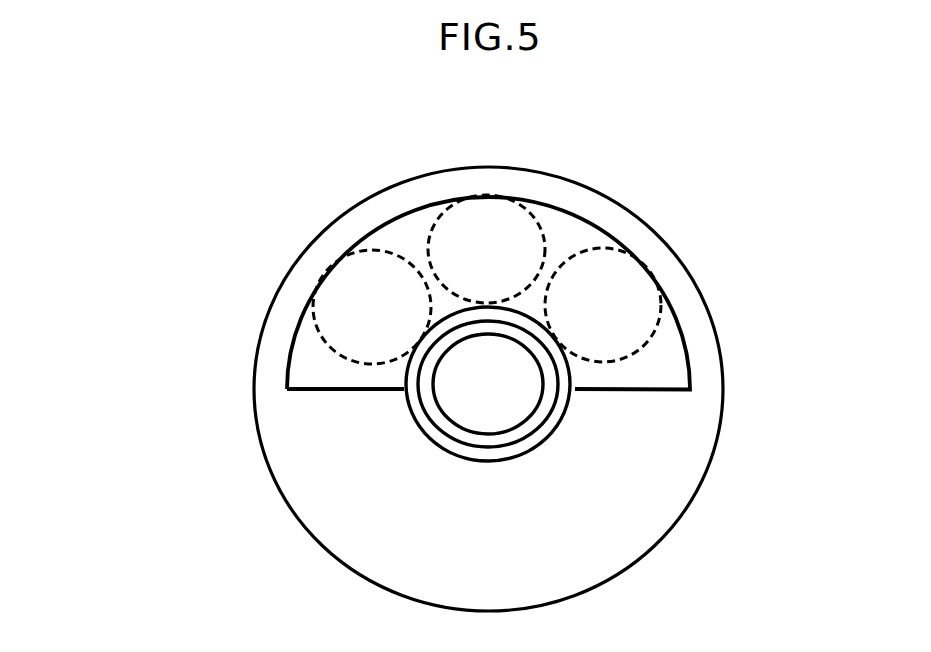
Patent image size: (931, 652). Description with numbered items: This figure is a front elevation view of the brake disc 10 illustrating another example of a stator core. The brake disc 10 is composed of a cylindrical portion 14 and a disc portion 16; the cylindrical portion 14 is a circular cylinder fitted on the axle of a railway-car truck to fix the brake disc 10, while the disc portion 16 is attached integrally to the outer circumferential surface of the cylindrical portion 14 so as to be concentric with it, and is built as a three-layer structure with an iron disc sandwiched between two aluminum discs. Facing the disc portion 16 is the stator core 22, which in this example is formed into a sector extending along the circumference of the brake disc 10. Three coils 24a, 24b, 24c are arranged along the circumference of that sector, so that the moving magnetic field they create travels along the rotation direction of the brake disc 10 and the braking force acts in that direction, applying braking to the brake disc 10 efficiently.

The brake disc 10 is at (127, 390).
The cylindrical portion 14 is at (421, 417).
The disc portion 16 is at (303, 474).
The stator core 22 is at (663, 347).
The coil 24a is at (632, 287).
The coil 24b is at (485, 222).
The coil 24c is at (328, 297).